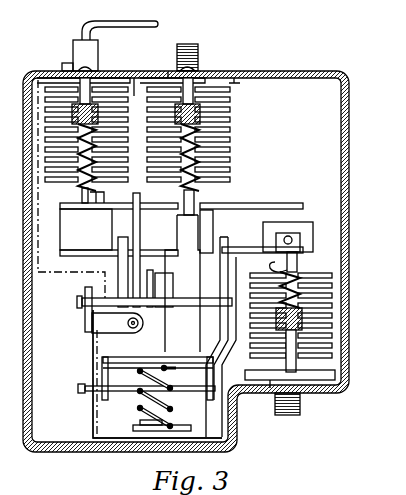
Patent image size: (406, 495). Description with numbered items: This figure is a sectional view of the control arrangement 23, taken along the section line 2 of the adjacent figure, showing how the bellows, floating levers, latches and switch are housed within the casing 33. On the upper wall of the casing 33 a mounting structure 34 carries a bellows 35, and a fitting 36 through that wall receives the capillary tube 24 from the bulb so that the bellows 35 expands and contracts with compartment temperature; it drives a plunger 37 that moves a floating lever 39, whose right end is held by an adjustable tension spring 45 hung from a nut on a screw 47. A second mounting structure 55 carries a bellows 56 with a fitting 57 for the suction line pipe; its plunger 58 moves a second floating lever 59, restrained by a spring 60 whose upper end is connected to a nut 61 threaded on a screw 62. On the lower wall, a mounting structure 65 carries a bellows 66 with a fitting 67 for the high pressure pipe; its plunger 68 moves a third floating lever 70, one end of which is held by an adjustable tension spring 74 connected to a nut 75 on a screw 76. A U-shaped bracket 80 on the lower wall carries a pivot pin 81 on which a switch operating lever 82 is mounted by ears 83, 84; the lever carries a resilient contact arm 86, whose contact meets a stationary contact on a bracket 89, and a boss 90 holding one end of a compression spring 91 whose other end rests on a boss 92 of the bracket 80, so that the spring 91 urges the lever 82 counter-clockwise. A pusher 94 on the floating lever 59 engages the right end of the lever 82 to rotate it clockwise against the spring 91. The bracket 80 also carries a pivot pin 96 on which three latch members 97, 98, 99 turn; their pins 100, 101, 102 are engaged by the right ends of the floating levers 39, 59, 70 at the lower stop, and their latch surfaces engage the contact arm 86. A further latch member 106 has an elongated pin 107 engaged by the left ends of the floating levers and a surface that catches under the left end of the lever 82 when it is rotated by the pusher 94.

The section line 2- 2 is at (37, 62).
The control arrangement 23 is at (266, 450).
The capillary tube 24 is at (132, 30).
The casing 33 is at (341, 123).
The mounting structure 34 is at (108, 134).
The bellows 35 is at (128, 134).
The fitting 36 is at (98, 53).
The plunger 37 is at (82, 193).
The floating lever 39 is at (60, 231).
The adjustable tension spring 45 is at (102, 193).
The screw 47 is at (62, 61).
The mounting structure 55 is at (238, 83).
The bellows 56 is at (231, 128).
The fitting 57 is at (200, 53).
The plunger 58 is at (196, 196).
The second floating lever 59 is at (213, 222).
The spring 60 is at (228, 154).
The nut 61 is at (213, 117).
The screw 62 is at (168, 72).
The mounting structure 65 is at (338, 376).
The bellows 66 is at (332, 331).
The fitting 67 is at (300, 412).
The plunger 68 is at (297, 263).
The third floating lever 70 is at (313, 238).
The adjustable tension spring 74 is at (270, 263).
The nut 75 is at (327, 312).
The screw 76 is at (270, 389).
The U-shaped bracket 80 is at (90, 414).
The pivot pin 81 is at (78, 388).
The switch operating lever 82 is at (129, 365).
The ear 83 is at (100, 363).
The ear 84 is at (209, 404).
The resilient contact arm 86 is at (149, 355).
The bracket 89 is at (85, 323).
The boss 90 is at (172, 375).
The compression spring 91 is at (138, 410).
The boss 92 is at (172, 428).
The pusher 94 is at (200, 331).
The pivot pin 96 is at (77, 299).
The latch member 97 is at (118, 265).
The latch member 98 is at (138, 259).
The latch member 99 is at (222, 263).
The pin 100 is at (78, 256).
The pin 101 is at (152, 248).
The pin 102 is at (257, 250).
The latch member 106 is at (126, 236).
The elongated pin 107 is at (118, 204).